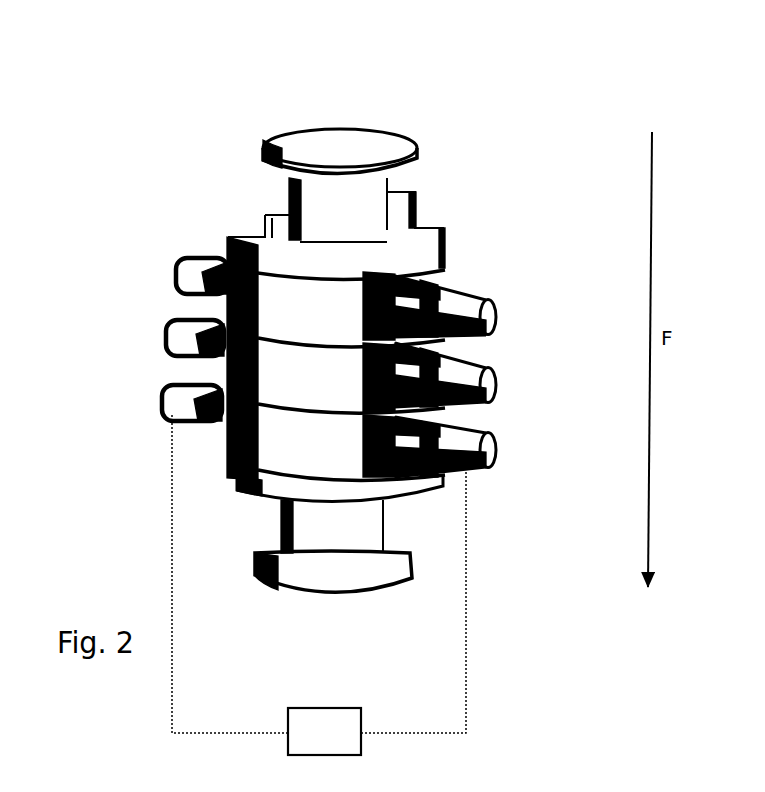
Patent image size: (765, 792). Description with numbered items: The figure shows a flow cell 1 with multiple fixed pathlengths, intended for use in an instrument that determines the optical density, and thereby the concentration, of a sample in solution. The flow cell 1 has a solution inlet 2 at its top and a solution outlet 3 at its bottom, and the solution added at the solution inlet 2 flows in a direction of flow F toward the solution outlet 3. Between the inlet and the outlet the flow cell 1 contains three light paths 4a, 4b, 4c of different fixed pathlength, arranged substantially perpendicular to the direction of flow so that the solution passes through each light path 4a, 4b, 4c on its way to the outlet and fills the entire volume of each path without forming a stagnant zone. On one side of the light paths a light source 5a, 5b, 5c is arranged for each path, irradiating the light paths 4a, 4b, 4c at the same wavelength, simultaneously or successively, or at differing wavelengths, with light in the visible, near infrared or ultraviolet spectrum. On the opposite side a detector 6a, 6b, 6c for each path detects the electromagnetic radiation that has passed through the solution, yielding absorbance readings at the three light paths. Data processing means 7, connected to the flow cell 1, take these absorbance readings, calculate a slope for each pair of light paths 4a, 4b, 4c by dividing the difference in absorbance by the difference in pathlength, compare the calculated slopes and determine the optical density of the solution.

The flow cell 1 is at (334, 369).
The solution inlet 2 is at (345, 112).
The solution outlet 3 is at (331, 606).
The light path 4a is at (334, 303).
The light path 4b is at (332, 378).
The light path 4c is at (328, 448).
The light source 5a is at (176, 268).
The light source 5b is at (166, 333).
The light source 5c is at (162, 398).
The detector 6a is at (498, 316).
The detector 6b is at (498, 390).
The detector 6c is at (498, 452).
The data processing means 7 is at (319, 585).